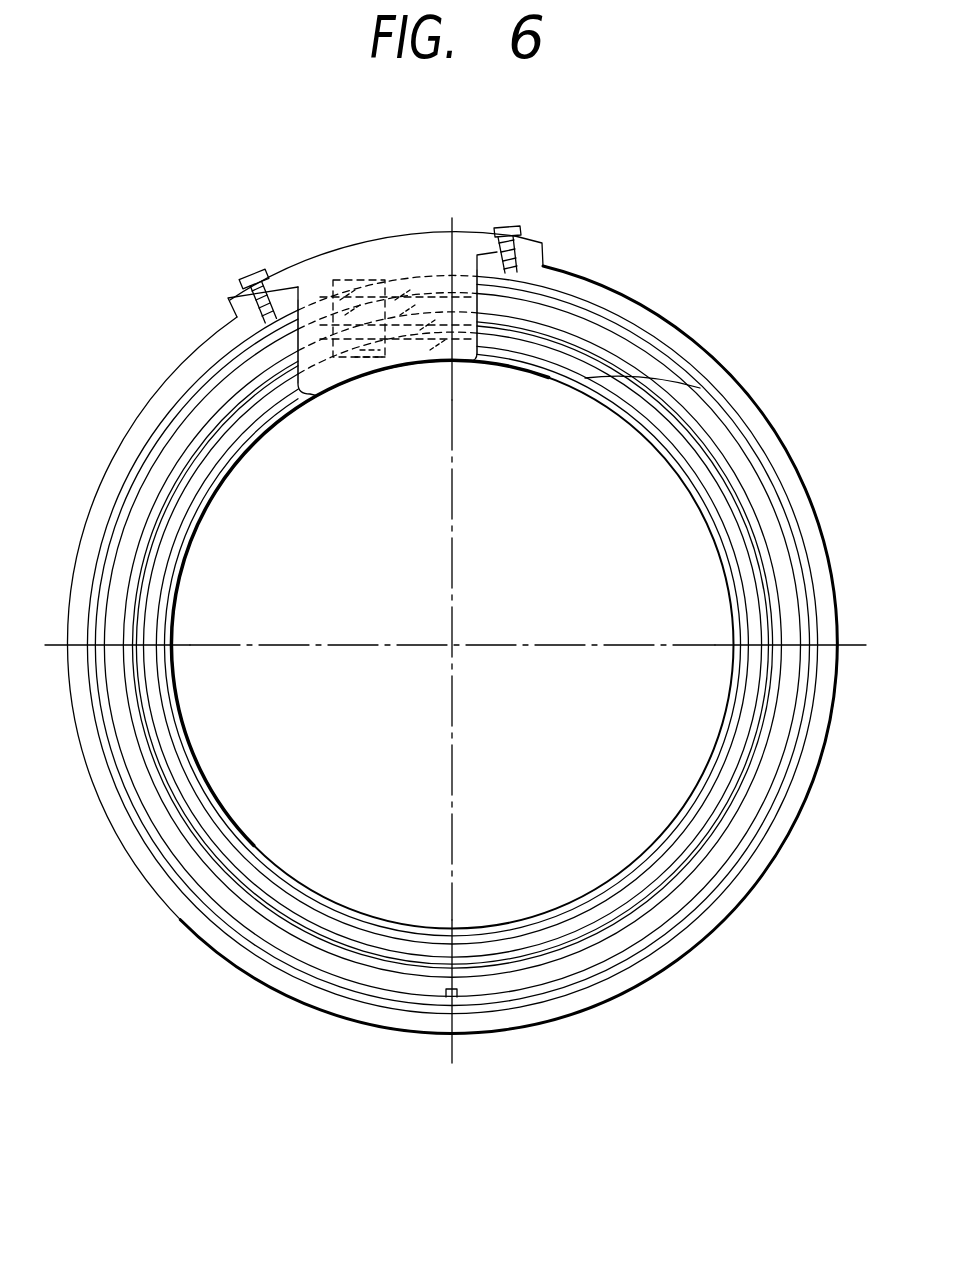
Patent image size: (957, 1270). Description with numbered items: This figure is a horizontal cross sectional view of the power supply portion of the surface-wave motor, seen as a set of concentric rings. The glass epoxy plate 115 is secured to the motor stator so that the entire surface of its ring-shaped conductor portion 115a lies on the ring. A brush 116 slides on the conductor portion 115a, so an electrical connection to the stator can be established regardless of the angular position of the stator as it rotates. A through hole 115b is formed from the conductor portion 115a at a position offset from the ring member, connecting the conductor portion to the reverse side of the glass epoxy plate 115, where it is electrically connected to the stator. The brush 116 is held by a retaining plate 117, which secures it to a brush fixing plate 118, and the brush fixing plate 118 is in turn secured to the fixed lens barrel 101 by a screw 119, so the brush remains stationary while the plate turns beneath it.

The fixed lens barrel 101 is at (578, 284).
The glass epoxy plate 115 is at (592, 406).
The conductor portion 115a is at (585, 378).
The through hole 115b is at (435, 368).
The brush 116 is at (392, 268).
The retaining plate 117 is at (368, 375).
The brush fixing plate 118 is at (401, 235).
The screw 119 is at (508, 228).